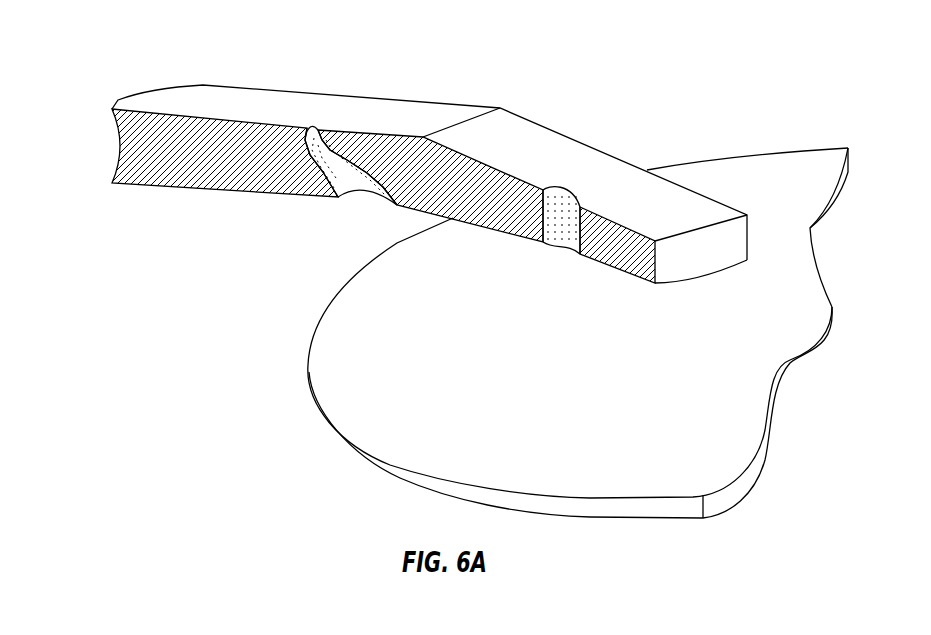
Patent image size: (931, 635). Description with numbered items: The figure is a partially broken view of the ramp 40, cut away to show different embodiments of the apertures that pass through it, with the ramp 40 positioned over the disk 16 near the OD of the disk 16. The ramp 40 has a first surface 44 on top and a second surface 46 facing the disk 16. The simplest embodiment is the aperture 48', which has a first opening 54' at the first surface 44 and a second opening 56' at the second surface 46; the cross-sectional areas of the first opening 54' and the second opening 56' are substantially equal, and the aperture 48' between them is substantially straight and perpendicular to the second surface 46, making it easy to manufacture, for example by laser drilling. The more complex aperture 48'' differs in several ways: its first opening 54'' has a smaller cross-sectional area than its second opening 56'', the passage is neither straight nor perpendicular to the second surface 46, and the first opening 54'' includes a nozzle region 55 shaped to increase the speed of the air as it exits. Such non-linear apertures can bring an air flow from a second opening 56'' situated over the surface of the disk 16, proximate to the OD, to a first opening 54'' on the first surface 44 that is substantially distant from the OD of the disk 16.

The ramp 40 is at (141, 58).
The disk 16 is at (652, 401).
The OD of the disk OD is at (342, 358).
The first surface 44 is at (433, 115).
The second surface 46 is at (177, 195).
The aperture 48' is at (527, 235).
The aperture 48'' is at (311, 187).
The first opening 54' is at (596, 176).
The first opening 54'' is at (357, 127).
The nozzle region 55 is at (289, 132).
The second opening 56' is at (535, 271).
The second opening 56'' is at (342, 231).